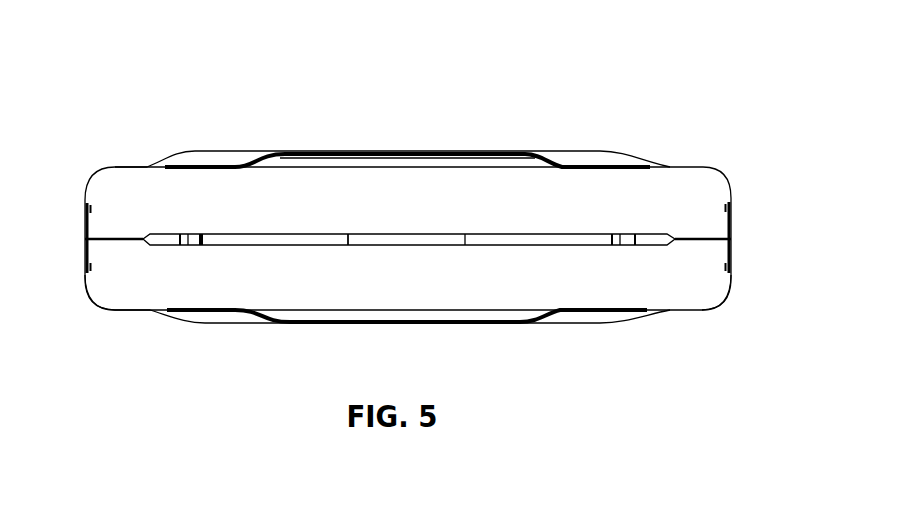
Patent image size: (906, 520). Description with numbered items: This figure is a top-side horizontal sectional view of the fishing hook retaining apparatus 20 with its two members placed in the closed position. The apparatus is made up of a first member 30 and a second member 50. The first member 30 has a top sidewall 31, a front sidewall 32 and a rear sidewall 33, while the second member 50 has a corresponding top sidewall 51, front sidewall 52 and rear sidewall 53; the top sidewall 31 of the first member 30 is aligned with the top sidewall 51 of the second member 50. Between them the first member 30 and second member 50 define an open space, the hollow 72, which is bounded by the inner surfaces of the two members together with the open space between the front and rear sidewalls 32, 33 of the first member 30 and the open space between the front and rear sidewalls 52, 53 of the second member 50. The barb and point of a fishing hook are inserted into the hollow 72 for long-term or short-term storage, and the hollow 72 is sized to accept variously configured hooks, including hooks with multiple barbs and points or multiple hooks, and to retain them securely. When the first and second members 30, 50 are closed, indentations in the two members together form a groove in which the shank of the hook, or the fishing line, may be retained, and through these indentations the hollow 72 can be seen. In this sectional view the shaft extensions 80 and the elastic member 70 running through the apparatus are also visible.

The fishing hook retaining apparatus 20 is at (132, 102).
The first member 30 is at (276, 355).
The top sidewall 31 is at (523, 270).
The front sidewall 32 is at (732, 283).
The rear sidewall 33 is at (84, 268).
The second member 50 is at (450, 138).
The top sidewall 51 is at (507, 210).
The front sidewall 52 is at (732, 221).
The rear sidewall 53 is at (86, 203).
The elastic member 70 is at (405, 242).
The hollow 72 is at (317, 240).
The shaft extensions 80 is at (188, 236).